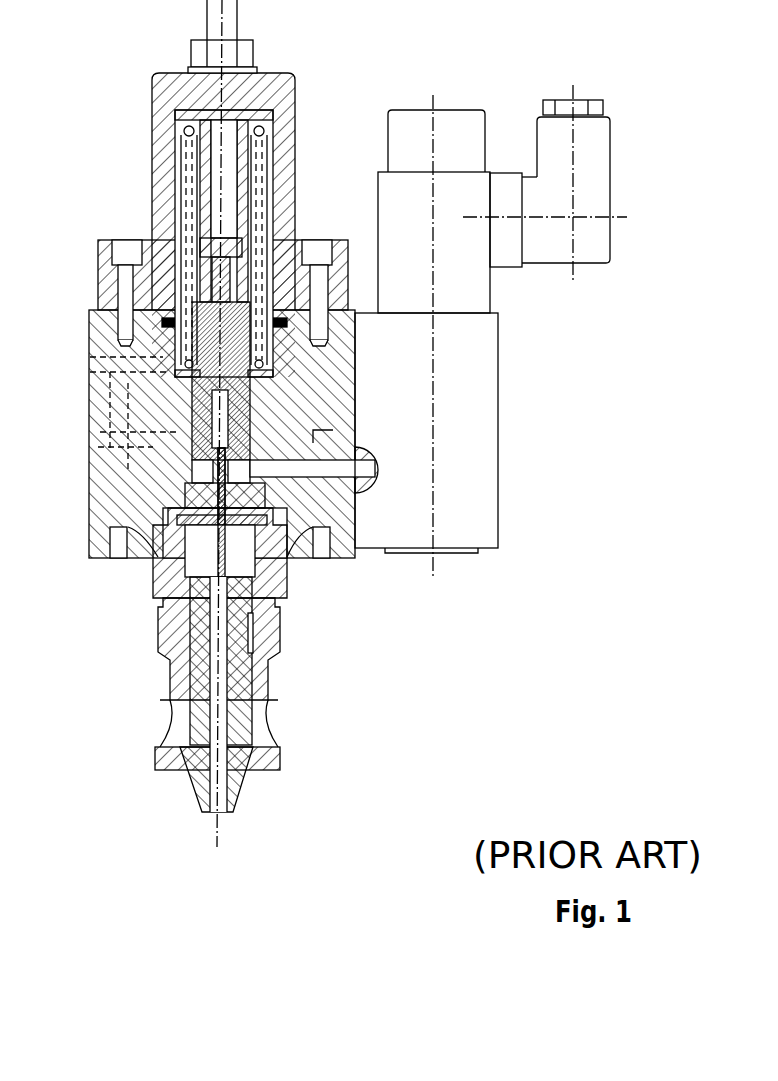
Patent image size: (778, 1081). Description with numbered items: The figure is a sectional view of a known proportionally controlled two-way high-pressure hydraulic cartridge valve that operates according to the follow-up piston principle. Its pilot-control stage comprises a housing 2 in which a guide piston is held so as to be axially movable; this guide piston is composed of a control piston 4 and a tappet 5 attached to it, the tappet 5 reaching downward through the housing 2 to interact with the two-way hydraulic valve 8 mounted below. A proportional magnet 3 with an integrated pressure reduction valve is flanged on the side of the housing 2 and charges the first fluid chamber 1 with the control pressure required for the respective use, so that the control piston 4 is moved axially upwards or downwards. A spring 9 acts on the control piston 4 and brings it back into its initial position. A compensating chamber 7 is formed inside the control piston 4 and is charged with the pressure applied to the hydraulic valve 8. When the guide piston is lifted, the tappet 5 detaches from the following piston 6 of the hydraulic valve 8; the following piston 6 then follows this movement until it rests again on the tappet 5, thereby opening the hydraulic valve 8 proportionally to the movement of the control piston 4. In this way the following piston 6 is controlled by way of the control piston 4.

The first fluid chamber 1 is at (197, 475).
The housing 2 is at (140, 458).
The proportional magnet 3 is at (477, 292).
The control piston 4 is at (195, 380).
The tappet 5 is at (212, 560).
The following piston 6 is at (237, 775).
The compensating chamber 7 is at (218, 423).
The hydraulic valve 8 is at (136, 727).
The spring 9 is at (183, 190).